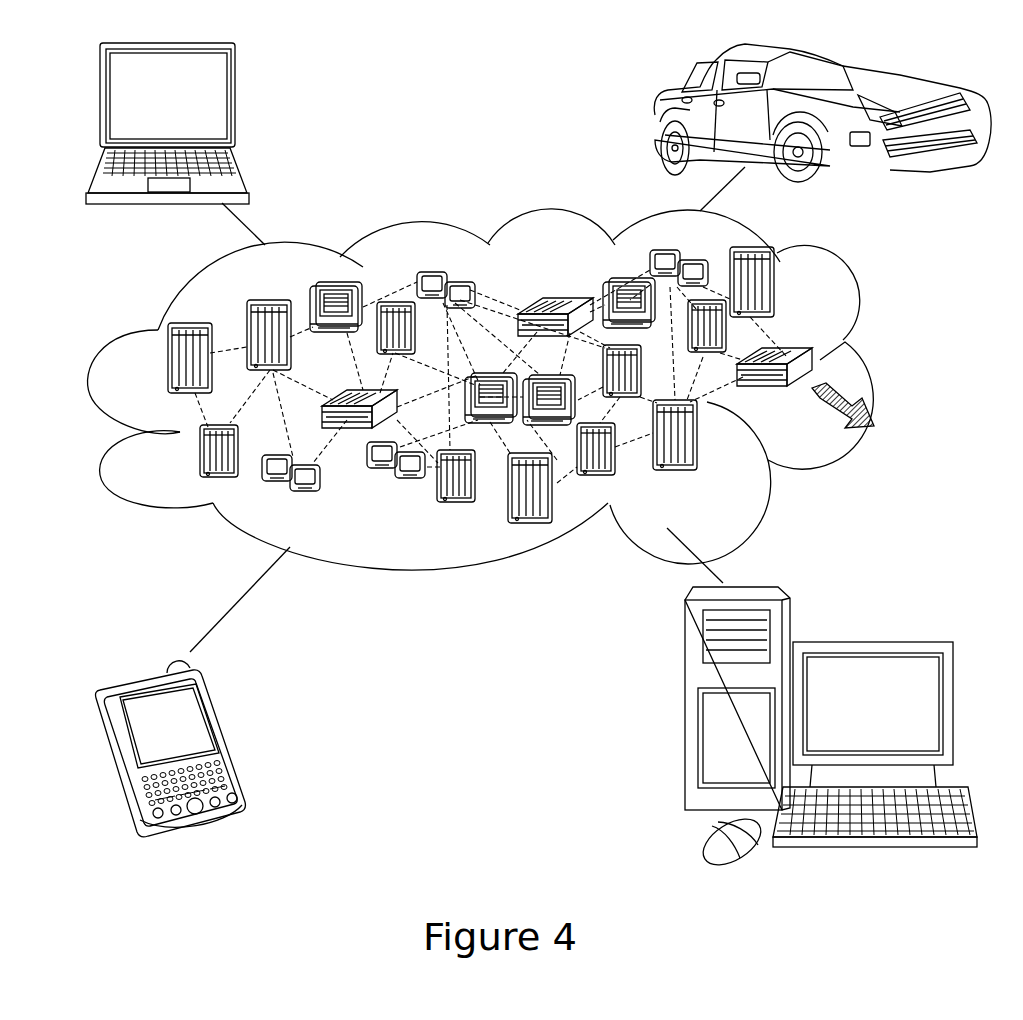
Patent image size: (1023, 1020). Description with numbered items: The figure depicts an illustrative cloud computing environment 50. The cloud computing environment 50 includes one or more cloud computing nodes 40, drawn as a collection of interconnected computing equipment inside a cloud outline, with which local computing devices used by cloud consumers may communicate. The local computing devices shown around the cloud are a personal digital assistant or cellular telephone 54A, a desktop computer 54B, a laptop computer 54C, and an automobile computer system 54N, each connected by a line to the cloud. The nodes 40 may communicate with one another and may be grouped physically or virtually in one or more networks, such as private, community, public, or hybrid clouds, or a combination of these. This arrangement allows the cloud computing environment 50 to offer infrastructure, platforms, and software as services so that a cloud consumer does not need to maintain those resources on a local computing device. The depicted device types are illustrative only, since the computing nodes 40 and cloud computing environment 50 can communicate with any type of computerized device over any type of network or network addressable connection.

The cloud computing environment 50 is at (870, 366).
The cloud computing nodes 40 is at (862, 412).
The personal digital assistant (PDA) or cellular telephone 54A is at (229, 736).
The desktop computer 54B is at (868, 642).
The laptop computer 54C is at (237, 102).
The automobile computer system 54N is at (656, 112).